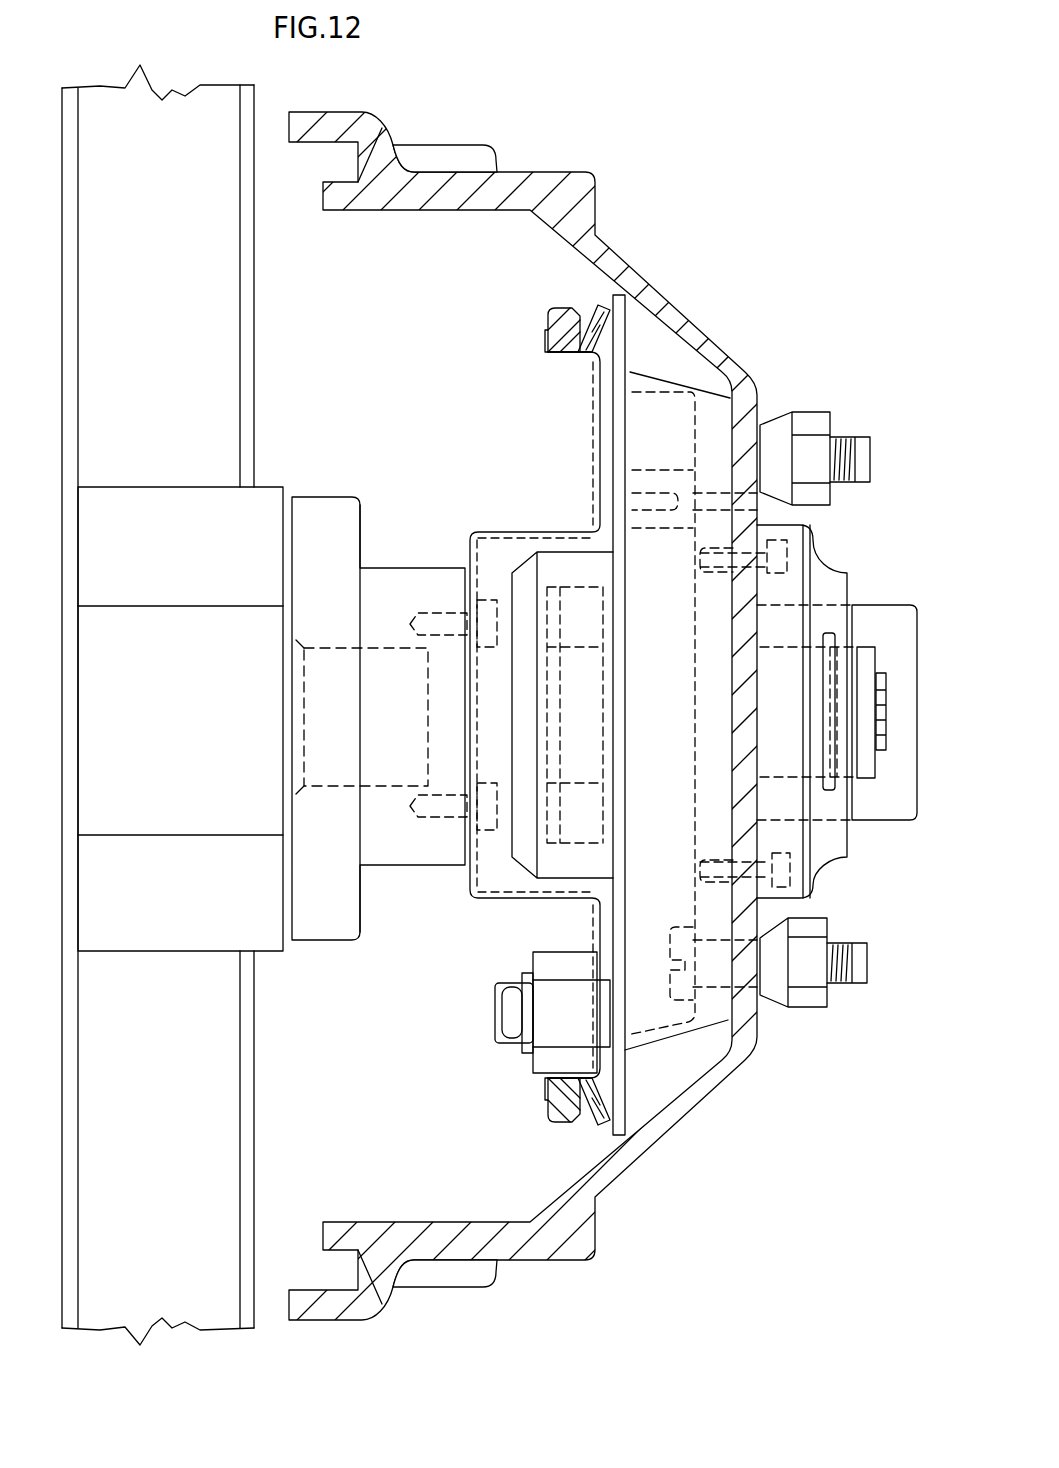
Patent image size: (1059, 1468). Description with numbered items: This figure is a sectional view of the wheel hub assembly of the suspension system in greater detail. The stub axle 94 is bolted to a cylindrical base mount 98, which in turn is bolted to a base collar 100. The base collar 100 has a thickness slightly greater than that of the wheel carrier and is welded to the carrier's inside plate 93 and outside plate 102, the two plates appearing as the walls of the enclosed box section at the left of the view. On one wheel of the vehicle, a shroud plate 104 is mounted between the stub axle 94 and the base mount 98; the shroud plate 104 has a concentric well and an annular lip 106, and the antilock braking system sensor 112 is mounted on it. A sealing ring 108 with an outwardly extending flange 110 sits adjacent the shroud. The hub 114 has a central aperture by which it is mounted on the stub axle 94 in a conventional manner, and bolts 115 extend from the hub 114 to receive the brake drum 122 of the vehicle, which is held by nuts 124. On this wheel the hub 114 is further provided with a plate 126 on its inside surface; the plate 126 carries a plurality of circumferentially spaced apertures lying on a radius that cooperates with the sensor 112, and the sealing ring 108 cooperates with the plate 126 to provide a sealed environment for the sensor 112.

The inside plate 93 is at (84, 398).
The stub axle 94 is at (660, 812).
The cylindrical base mount 98 is at (410, 868).
The base collar 100 is at (226, 903).
The outside plate 102 is at (258, 1100).
The shroud plate 104 is at (595, 405).
The annular lip 106 is at (547, 355).
The sealing ring 108 is at (555, 308).
The flange 110 is at (598, 313).
The antilock braking system sensor 112 is at (487, 1020).
The hub 114 is at (712, 432).
The bolts 115 is at (870, 482).
The brake drum 122 is at (547, 172).
The nuts 124 is at (815, 412).
The plate 126 is at (630, 337).